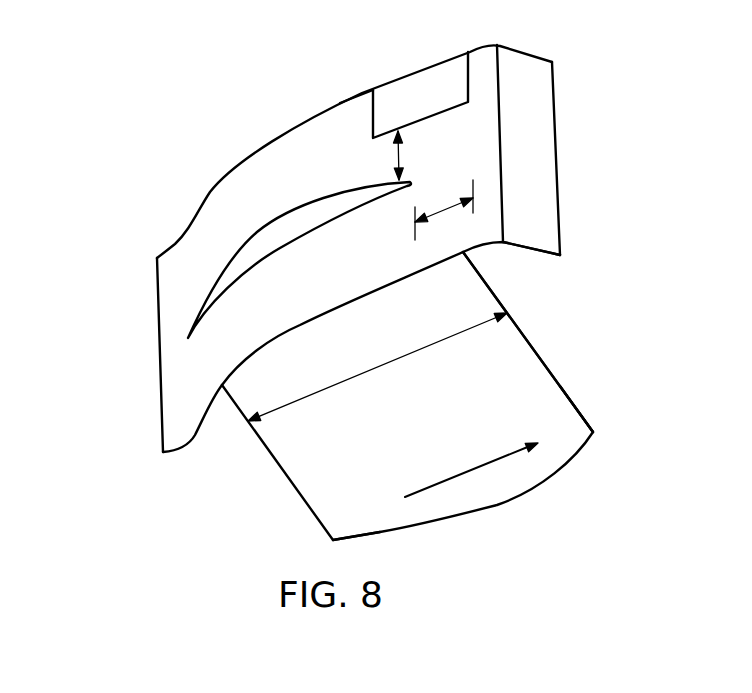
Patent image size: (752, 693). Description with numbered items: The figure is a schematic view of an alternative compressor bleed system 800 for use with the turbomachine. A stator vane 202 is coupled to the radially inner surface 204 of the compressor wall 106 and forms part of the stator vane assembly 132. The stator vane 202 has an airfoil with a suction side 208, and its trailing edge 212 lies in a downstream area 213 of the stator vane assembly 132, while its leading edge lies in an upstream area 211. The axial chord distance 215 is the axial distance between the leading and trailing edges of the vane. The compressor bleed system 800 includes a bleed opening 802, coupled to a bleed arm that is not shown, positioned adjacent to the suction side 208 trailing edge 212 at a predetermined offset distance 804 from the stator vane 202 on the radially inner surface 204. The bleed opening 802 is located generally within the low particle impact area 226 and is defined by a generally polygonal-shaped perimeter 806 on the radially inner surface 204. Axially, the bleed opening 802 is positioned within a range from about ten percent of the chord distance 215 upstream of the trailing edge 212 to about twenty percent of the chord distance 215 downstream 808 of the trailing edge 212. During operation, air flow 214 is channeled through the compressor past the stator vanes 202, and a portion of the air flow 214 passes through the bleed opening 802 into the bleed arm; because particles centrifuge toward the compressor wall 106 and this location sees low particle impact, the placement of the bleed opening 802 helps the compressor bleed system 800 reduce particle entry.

The compressor bleed system 800 is at (138, 79).
The bleed opening 802 is at (438, 101).
The polygonal-shaped perimeter 806 is at (468, 104).
The third low particle impact area 226 is at (358, 112).
The predetermined offset distance 804 is at (403, 155).
The downstream distance 808 is at (445, 222).
The suction side 208 is at (257, 232).
The radially inner surface 204 is at (203, 276).
The compressor wall 106 is at (158, 447).
The stator vane assembly 132 is at (188, 444).
The stator vane 202 is at (513, 418).
The trailing edge 212 is at (502, 297).
The downstream area 213 is at (630, 395).
The axial chord distance 215 is at (390, 362).
The air flow 214 is at (455, 472).
The upstream area 211 is at (270, 520).